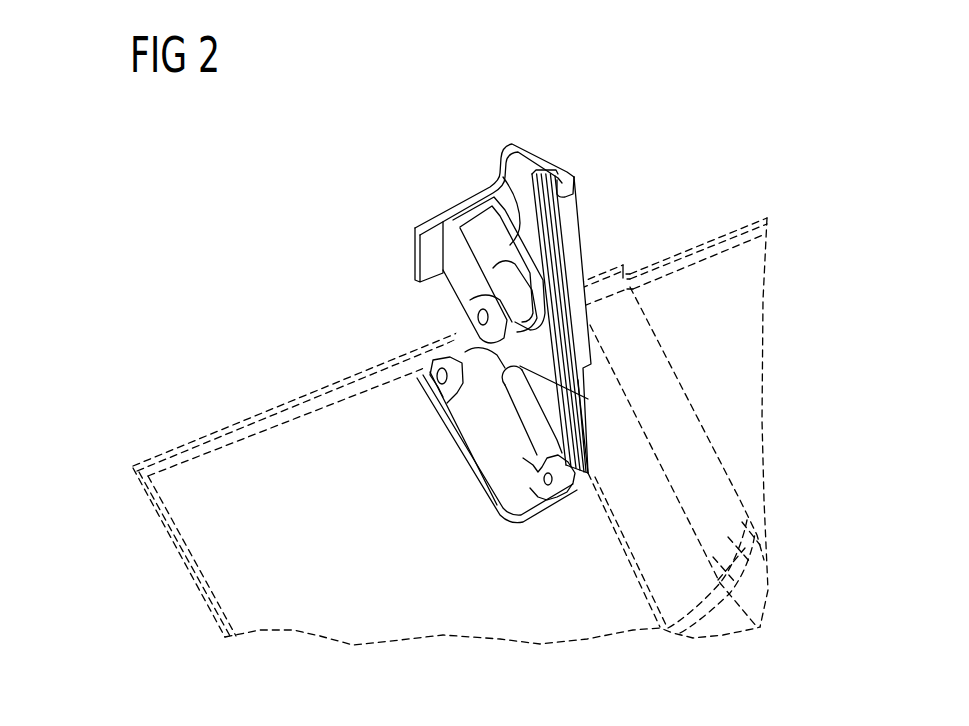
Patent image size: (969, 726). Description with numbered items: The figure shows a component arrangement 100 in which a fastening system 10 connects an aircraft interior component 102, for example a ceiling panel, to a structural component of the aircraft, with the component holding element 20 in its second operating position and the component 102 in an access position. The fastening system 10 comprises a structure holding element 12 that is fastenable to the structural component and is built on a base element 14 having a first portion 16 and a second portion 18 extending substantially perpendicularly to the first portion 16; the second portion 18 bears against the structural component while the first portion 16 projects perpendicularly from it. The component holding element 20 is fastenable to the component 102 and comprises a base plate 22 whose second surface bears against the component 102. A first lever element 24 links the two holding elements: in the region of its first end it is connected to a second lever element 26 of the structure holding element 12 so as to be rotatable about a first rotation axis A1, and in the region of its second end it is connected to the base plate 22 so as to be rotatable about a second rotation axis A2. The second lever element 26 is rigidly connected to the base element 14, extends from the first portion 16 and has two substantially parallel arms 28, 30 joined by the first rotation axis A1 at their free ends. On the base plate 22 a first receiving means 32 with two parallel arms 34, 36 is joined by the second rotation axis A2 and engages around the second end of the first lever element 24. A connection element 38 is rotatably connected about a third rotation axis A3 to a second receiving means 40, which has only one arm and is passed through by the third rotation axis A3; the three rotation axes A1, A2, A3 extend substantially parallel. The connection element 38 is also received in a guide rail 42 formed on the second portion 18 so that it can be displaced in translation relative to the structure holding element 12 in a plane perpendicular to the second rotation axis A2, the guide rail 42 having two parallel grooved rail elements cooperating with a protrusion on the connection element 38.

The fastening system 10 is at (632, 243).
The structure holding element 12 is at (502, 273).
The base element 14 is at (523, 143).
The first portion 16 is at (433, 217).
The second portion 18 is at (568, 173).
The component holding element 20 is at (450, 495).
The base plate 22 is at (510, 510).
The first lever element 24 is at (480, 350).
The second lever element 26 is at (490, 203).
The arm 28 is at (455, 250).
The arm 30 is at (503, 177).
The first receiving means 32 is at (430, 372).
The arm 34 is at (423, 357).
The arm 36 is at (588, 399).
The connection element 38 is at (588, 446).
The second receiving means 40 is at (590, 497).
The guide rail 42 is at (572, 183).
The component arrangement 100 is at (645, 186).
The component 102 is at (190, 447).
The first rotation axis A1 is at (477, 313).
The second rotation axis A2 is at (436, 378).
The third rotation axis A3 is at (545, 487).